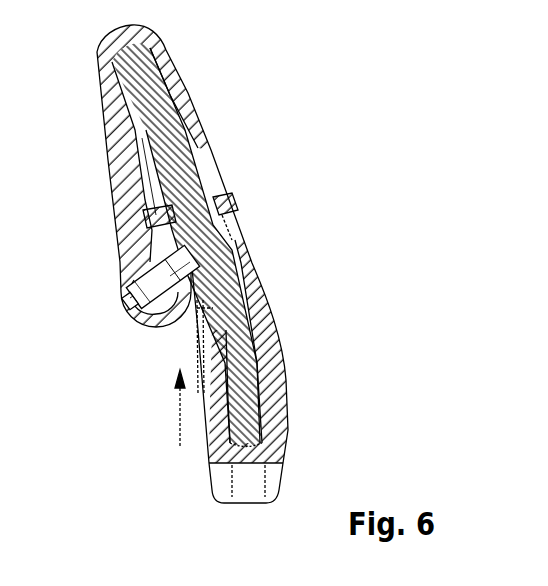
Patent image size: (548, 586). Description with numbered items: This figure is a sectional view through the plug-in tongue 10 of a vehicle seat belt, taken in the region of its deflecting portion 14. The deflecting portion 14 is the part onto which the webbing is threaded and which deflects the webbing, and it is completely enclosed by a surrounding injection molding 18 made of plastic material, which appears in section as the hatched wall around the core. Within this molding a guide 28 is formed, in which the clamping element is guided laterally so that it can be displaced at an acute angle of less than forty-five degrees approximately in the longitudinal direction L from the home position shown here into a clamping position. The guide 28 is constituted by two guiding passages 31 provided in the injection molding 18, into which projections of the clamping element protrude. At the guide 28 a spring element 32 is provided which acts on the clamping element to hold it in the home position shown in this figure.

The plug-in tongue 10 is at (212, 261).
The deflecting portion 14 is at (168, 63).
The surrounding injection molding 18 is at (177, 95).
The guide 28 is at (118, 274).
The guiding passage 31 is at (128, 316).
The spring element 32 is at (192, 255).
The longitudinal direction L is at (177, 418).